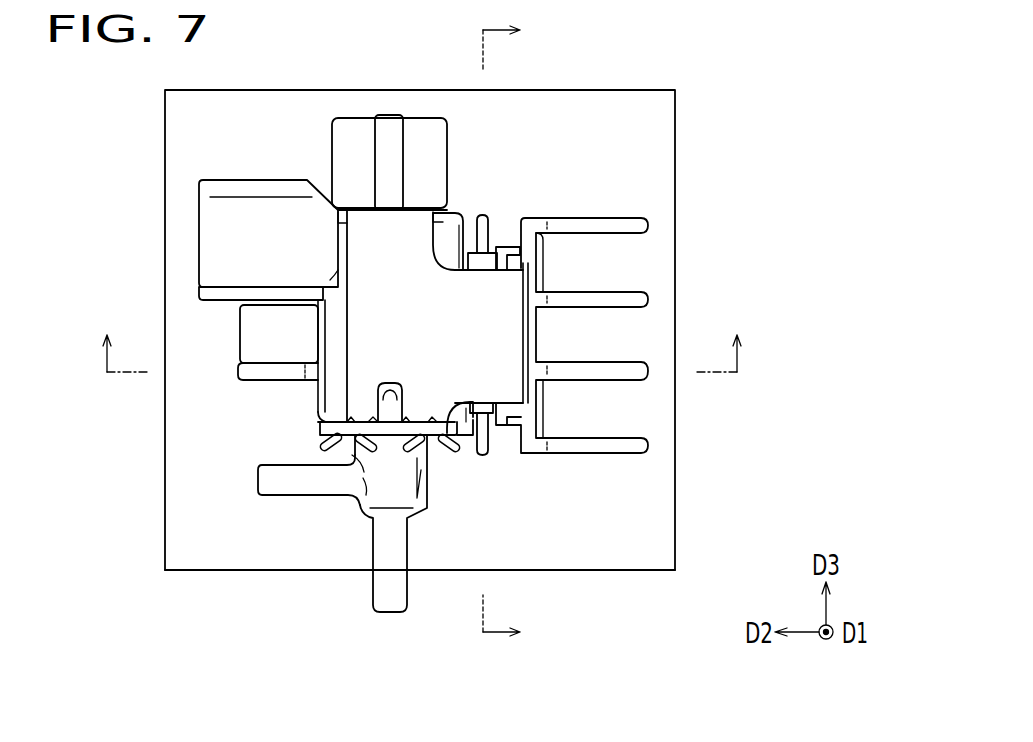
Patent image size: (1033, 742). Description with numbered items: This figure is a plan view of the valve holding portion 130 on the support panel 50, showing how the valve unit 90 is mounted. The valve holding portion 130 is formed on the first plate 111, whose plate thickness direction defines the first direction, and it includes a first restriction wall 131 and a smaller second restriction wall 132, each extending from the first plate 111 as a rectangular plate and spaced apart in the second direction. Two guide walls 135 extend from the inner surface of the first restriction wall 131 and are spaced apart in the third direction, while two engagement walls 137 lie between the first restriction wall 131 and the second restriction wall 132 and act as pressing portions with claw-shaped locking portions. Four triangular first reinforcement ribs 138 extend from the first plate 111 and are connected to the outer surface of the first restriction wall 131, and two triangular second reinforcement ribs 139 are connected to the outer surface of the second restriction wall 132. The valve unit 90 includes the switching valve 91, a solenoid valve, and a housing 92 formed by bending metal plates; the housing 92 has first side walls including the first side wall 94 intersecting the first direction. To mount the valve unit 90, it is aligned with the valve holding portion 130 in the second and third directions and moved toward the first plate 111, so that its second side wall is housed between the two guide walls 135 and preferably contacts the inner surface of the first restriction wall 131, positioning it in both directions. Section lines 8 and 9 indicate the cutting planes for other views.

The support panel 50 is at (156, 121).
The first plate 111 is at (415, 613).
The section line for FIG. 8 is at (514, 333).
The section line for FIG. 9 is at (421, 335).
The valve holding portion 130 is at (630, 304).
The first reinforcement ribs 138 is at (648, 224).
The first restriction wall 131 is at (538, 332).
The engagement wall 137 is at (483, 214).
The guide walls 135 is at (500, 246).
The second reinforcement ribs 139 is at (244, 342).
The second restriction wall 132 is at (318, 335).
The first side wall 94 is at (335, 409).
The housing 92 is at (390, 402).
The valve unit 90 is at (359, 540).
The switching valve 91 is at (350, 505).